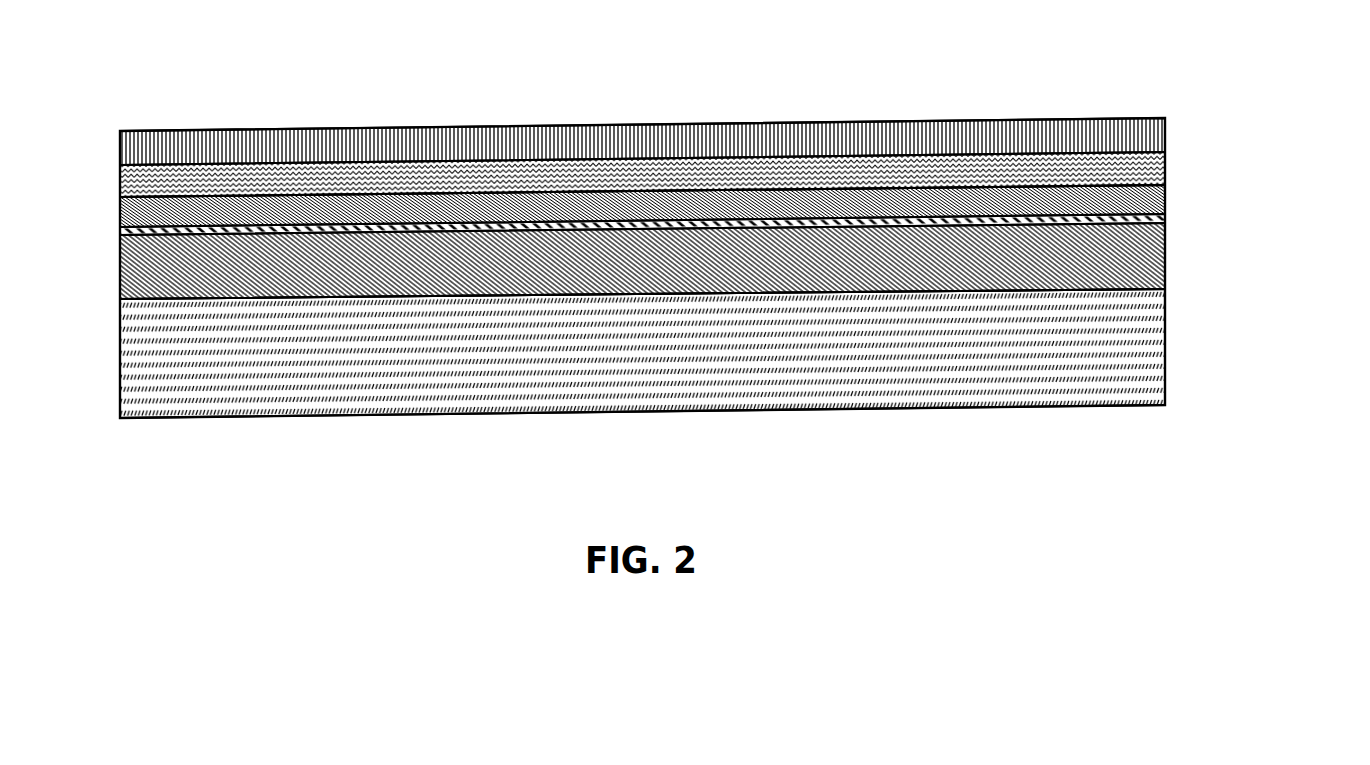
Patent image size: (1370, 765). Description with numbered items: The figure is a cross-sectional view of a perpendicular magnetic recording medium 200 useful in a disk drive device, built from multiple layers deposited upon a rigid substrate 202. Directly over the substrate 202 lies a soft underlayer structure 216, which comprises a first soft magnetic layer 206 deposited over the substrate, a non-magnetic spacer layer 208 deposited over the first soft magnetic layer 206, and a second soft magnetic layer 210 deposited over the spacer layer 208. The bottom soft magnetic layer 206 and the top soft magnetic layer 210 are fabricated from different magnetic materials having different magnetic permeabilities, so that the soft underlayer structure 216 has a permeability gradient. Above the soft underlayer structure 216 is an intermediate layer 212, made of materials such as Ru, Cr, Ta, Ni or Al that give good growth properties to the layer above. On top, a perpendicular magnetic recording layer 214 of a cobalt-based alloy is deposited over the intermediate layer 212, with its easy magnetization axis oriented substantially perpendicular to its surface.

The magnetic recording medium 200 is at (652, 119).
The rigid substrate 202 is at (660, 412).
The first soft magnetic layer 206 is at (1167, 253).
The non-magnetic spacer layer 208 is at (1165, 217).
The second soft magnetic layer 210 is at (1165, 195).
The intermediate layer 212 is at (1165, 160).
The perpendicular magnetic recording layer 214 is at (1165, 140).
The soft underlayer structure 216 is at (112, 196).